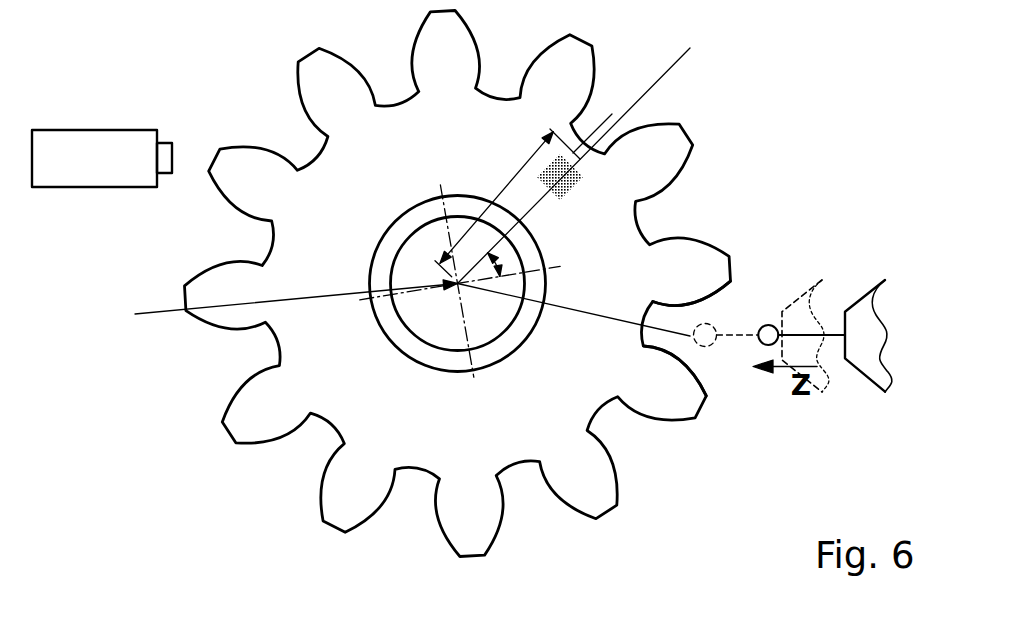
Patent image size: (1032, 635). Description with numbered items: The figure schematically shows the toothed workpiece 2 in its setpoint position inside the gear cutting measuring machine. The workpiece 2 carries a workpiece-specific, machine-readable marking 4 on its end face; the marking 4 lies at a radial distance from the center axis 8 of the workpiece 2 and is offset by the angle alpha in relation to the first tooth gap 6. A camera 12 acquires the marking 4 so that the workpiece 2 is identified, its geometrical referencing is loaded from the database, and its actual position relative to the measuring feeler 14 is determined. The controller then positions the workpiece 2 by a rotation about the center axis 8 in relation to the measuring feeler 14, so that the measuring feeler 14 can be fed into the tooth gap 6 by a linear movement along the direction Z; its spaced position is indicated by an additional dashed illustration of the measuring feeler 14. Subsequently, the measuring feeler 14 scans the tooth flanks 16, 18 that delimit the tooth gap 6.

The toothed workpiece 2 is at (160, 87).
The marking 4 is at (582, 152).
The first tooth gap 6 is at (684, 318).
The center axis 8 is at (282, 305).
The camera 12 is at (79, 154).
The measuring feeler 14 is at (830, 333).
The tooth flank 16 is at (680, 305).
The tooth flank 18 is at (693, 365).